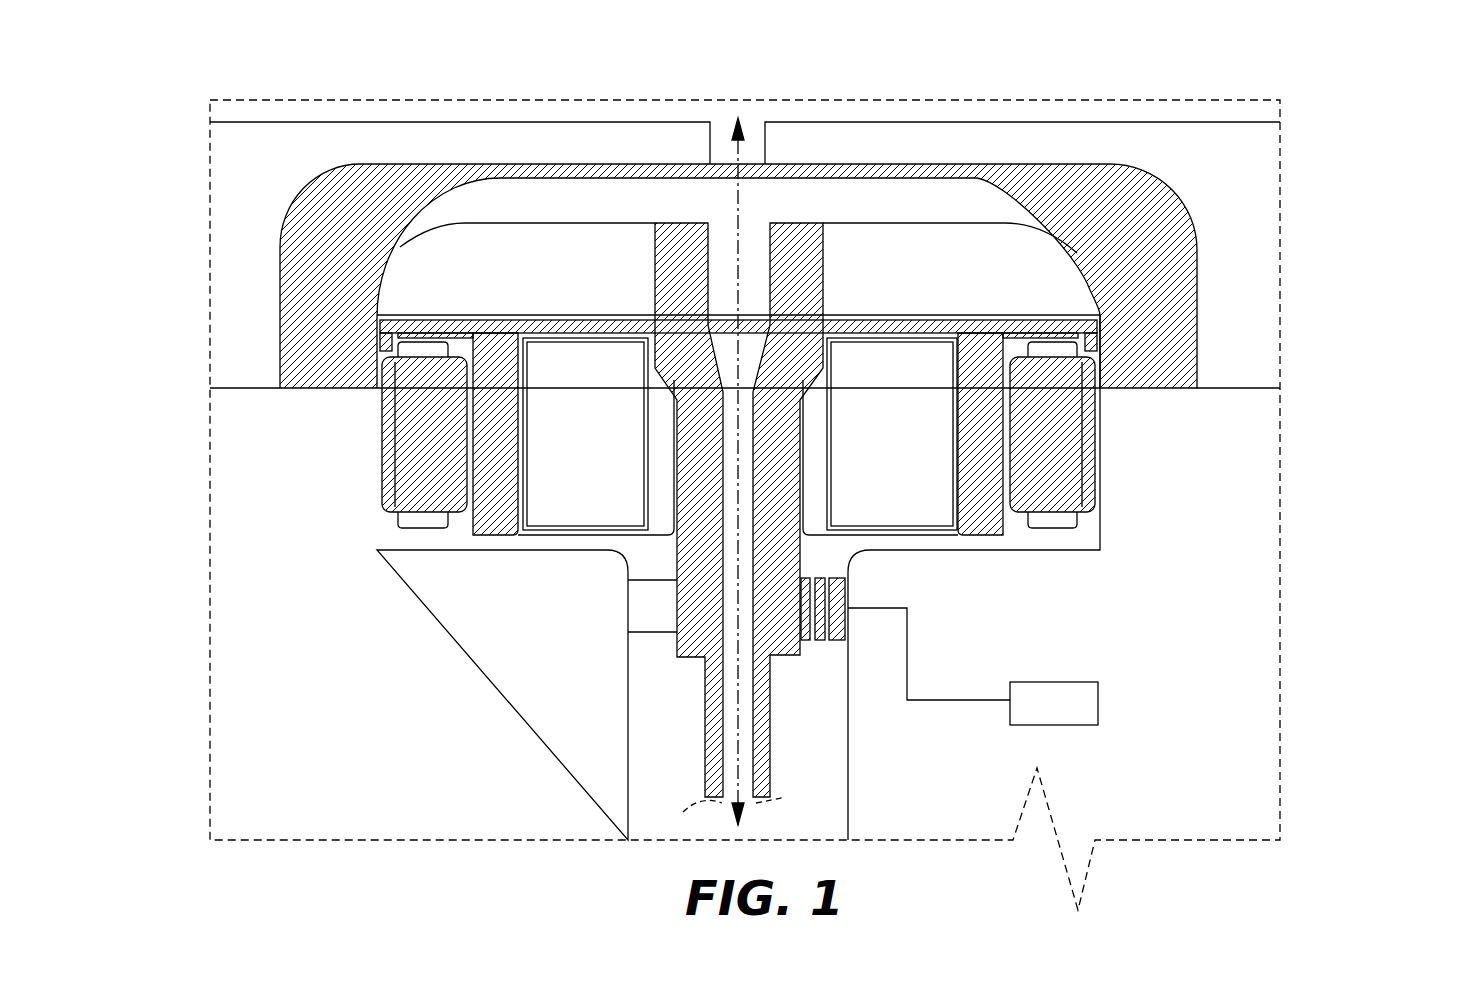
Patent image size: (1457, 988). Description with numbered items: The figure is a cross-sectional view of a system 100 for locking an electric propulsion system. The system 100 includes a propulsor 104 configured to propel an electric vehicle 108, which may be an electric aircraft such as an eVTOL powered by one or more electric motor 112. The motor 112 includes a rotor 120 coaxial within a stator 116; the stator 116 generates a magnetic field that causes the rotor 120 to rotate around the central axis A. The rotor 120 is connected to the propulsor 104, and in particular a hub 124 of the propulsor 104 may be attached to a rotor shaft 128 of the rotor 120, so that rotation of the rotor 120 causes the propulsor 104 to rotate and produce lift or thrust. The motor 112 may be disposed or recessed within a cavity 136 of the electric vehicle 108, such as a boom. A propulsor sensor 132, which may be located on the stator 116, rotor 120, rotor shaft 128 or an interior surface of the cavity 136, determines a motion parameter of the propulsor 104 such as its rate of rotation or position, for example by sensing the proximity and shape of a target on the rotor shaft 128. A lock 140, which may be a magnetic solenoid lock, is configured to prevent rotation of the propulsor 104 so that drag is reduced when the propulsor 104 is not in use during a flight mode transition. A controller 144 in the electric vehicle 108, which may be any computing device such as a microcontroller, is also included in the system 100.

The system 100 is at (512, 70).
The propulsor 104 is at (767, 477).
The electric vehicle 108 is at (946, 755).
The electric motor 112 is at (372, 446).
The stator 116 is at (1100, 462).
The rotor 120 is at (1005, 530).
The hub 124 is at (1190, 208).
The rotor shaft 128 is at (1077, 253).
The propulsor sensor 132 is at (850, 592).
The cavity 136 is at (832, 755).
The lock 140 is at (628, 597).
The controller 144 is at (1085, 725).